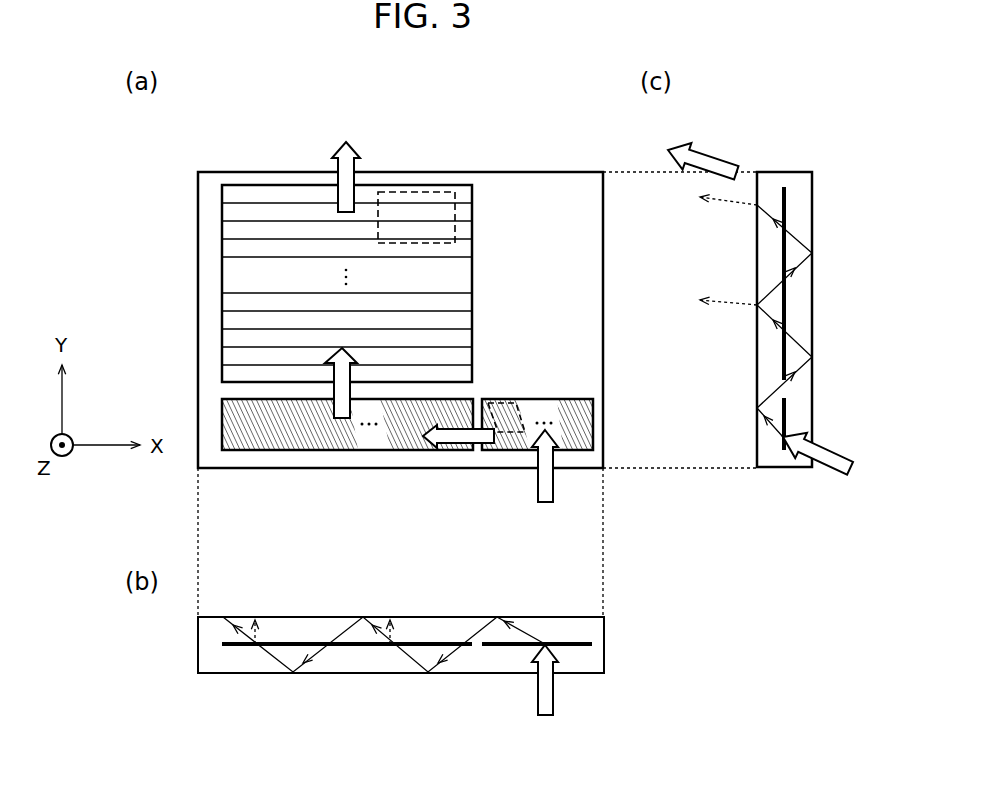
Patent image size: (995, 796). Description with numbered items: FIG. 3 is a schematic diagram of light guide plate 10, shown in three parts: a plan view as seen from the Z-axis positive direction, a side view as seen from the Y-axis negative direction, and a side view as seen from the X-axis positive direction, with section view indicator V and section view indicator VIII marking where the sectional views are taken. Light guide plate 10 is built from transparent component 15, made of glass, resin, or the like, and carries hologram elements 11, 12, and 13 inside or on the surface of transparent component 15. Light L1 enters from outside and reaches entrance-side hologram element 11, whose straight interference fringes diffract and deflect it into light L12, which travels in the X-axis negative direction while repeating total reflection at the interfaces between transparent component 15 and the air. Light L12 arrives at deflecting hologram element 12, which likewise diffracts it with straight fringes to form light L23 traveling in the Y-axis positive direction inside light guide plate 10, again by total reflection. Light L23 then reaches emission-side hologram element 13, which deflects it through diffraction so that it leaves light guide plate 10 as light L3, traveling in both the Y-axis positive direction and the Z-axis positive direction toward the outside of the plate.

The light guide plate 10 is at (587, 172).
The hologram element 11 is at (560, 398).
The hologram element 12 is at (463, 397).
The hologram element 13 is at (463, 303).
The transparent component 15 is at (603, 245).
The section view indicator V is at (455, 210).
The section view indicator VIII is at (517, 400).
The light L1 is at (548, 483).
The light L12 is at (477, 445).
The light L23 is at (338, 412).
The light L3 is at (350, 162).